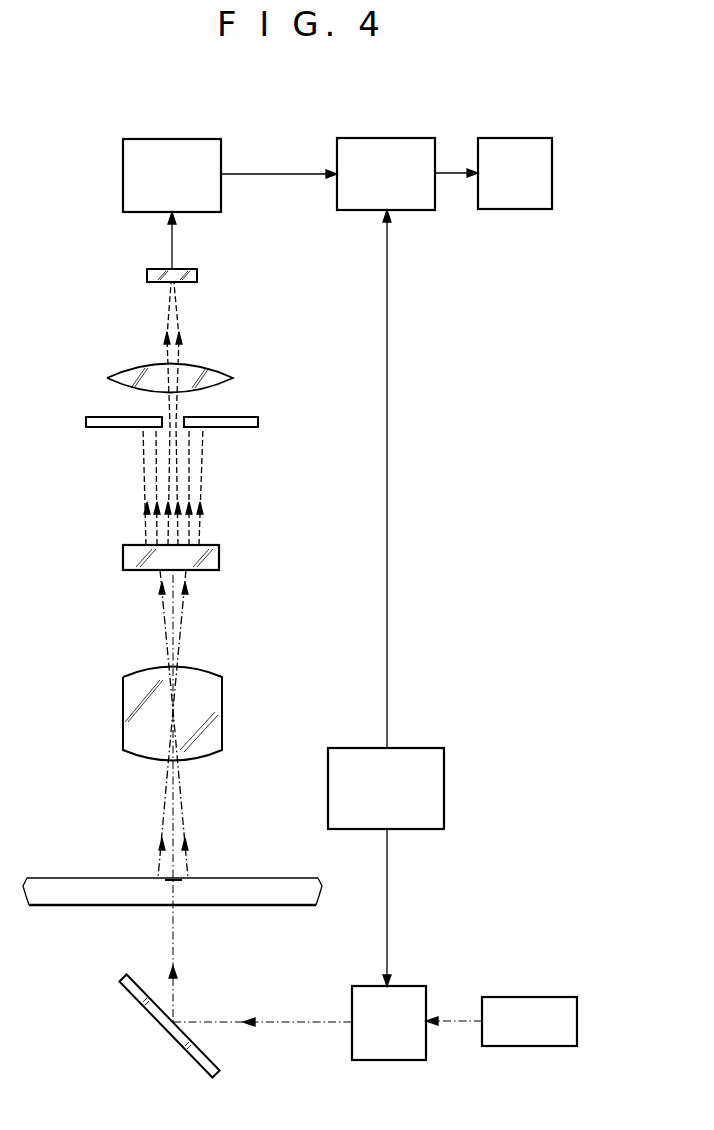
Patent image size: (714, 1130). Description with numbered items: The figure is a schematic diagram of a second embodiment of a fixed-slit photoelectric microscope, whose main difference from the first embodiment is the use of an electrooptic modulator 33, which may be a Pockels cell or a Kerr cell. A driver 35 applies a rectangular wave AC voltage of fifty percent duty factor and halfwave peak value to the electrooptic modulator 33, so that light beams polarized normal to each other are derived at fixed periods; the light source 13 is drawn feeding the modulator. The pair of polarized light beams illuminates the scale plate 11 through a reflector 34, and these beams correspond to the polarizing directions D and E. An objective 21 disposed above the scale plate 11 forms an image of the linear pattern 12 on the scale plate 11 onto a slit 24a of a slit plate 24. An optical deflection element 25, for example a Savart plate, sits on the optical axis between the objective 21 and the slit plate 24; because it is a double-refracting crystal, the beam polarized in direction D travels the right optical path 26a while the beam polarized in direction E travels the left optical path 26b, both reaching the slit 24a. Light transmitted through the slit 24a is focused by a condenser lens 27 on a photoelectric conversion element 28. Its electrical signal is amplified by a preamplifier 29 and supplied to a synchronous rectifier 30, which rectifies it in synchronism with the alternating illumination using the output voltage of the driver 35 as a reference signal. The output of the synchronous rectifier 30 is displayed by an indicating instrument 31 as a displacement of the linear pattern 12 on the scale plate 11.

The scale plate 11 is at (263, 880).
The linear pattern 12 is at (185, 879).
The light source 13 is at (530, 997).
The objective 21 is at (222, 710).
The slit plate 24 is at (260, 422).
The slit 24a is at (185, 413).
The optical deflection element 25 is at (222, 557).
The right optical path 26a is at (202, 457).
The left optical path 26b is at (143, 463).
The condenser lens 27 is at (203, 365).
The photoelectric conversion element 28 is at (200, 275).
The preamplifier 29 is at (172, 139).
The synchronous rectifier 30 is at (386, 138).
The indicating instrument 31 is at (516, 138).
The electrooptic modulator 33 is at (420, 986).
The reflector 34 is at (132, 998).
The driver 35 is at (437, 748).